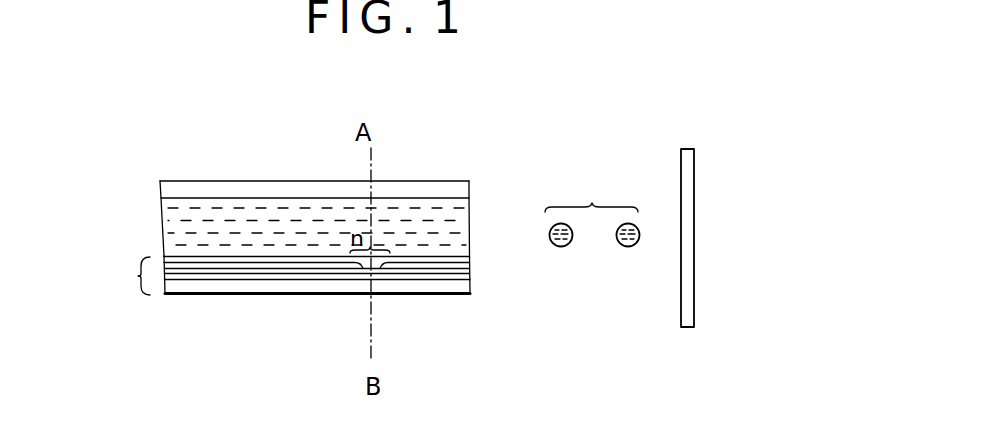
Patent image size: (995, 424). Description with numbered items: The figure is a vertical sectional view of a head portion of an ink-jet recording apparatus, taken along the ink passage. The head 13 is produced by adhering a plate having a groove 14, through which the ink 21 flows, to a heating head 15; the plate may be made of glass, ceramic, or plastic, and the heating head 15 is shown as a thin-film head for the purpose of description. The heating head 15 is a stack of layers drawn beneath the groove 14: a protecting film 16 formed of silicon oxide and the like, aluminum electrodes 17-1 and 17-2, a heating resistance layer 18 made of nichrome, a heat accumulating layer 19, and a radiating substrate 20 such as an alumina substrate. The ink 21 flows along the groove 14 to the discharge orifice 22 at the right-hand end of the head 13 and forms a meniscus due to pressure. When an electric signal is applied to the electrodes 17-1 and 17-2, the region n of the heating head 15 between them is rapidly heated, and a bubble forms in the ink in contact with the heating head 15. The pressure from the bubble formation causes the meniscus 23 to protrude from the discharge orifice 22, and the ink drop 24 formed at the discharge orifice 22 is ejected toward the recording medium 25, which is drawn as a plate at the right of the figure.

The head 13 is at (244, 181).
The groove 14 is at (312, 198).
The ink 21 is at (185, 206).
The heating head 15 is at (304, 301).
The protecting film 16 is at (195, 262).
The aluminum electrode 17-1 is at (233, 268).
The aluminum electrode 17-2 is at (452, 265).
The heating resistance layer 18 is at (280, 274).
The heat accumulating layer 19 is at (316, 280).
The radiating substrate 20 is at (407, 294).
The discharge orifice 22 is at (474, 252).
The meniscus 23 is at (473, 228).
The ink drop 24 is at (592, 210).
The recording medium 25 is at (679, 185).